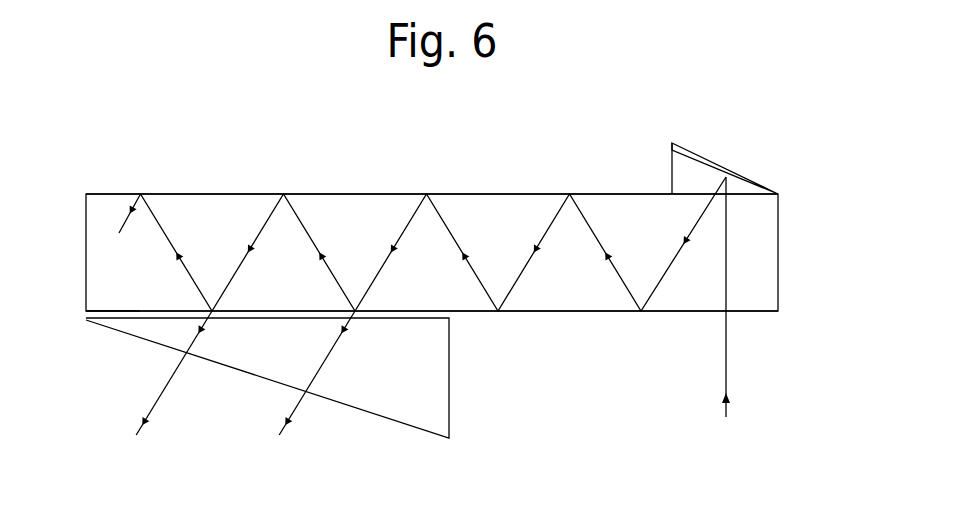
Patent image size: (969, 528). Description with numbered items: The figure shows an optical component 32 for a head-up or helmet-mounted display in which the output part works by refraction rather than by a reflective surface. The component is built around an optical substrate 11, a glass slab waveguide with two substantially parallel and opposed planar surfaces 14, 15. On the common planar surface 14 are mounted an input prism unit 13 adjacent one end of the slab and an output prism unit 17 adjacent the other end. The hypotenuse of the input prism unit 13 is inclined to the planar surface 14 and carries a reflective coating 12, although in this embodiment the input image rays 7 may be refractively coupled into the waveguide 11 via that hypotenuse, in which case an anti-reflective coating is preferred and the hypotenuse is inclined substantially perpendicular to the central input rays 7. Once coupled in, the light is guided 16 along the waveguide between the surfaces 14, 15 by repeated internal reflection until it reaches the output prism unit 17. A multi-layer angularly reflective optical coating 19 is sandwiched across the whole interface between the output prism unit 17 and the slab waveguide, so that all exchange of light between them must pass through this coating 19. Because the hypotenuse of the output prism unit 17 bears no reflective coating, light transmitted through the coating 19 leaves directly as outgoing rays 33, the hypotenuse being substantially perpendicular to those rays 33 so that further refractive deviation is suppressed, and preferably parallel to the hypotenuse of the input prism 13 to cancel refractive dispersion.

The input image rays 7 is at (727, 357).
The optical substrate 11 is at (762, 255).
The reflective coating 12 is at (723, 162).
The input prism unit 13 is at (683, 173).
The planar surface 14 is at (528, 194).
The planar surface 15 is at (538, 313).
The guided light 16 is at (407, 228).
The output prism unit 17 is at (407, 397).
The multi-layer angularly reflective optical coating 19 is at (139, 311).
The light guide arrangement 32 is at (798, 143).
The outgoing rays 33 is at (158, 403).